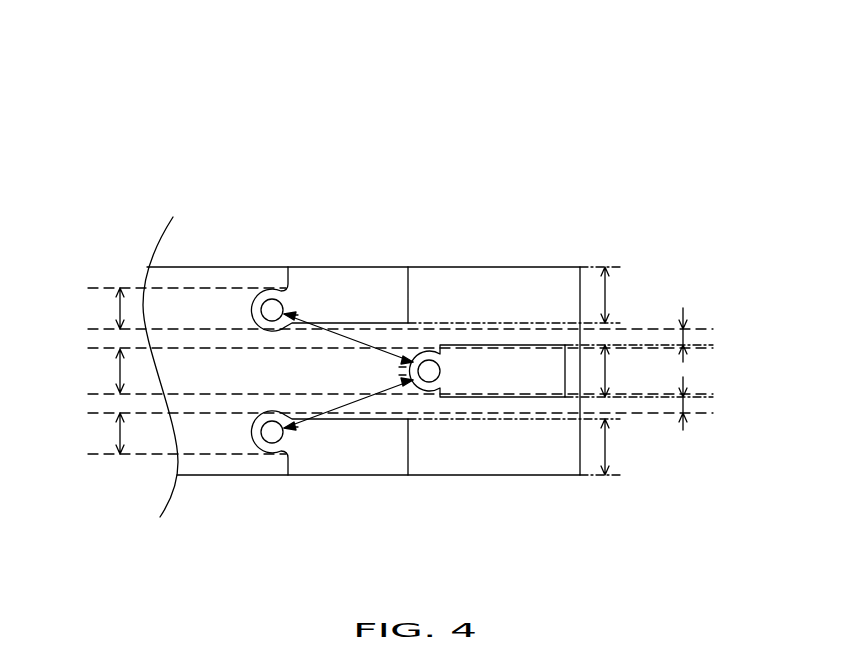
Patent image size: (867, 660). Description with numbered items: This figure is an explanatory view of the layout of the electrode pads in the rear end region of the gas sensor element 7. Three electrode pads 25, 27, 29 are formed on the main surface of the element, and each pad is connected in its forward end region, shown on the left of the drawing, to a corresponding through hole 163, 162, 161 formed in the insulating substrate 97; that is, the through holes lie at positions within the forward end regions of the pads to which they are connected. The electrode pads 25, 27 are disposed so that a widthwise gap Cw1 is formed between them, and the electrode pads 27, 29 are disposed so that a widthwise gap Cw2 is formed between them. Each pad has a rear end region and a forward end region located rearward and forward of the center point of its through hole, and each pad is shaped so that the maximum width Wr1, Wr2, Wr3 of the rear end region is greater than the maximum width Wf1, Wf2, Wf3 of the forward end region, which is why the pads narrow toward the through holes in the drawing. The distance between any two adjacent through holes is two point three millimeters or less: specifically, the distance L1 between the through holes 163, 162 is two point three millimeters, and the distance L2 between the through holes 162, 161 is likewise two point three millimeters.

The gas sensor element 7 is at (363, 108).
The insulating substrate 97 is at (512, 462).
The electrode pad 25 is at (362, 283).
The through hole 163 is at (272, 304).
The electrode pad 29 is at (362, 459).
The through hole 161 is at (272, 438).
The electrode pad 27 is at (508, 355).
The through hole 162 is at (428, 366).
The distance between through holes 163 and 162 L1 is at (348, 332).
The distance between through holes 162 and 161 L2 is at (348, 412).
The maximum width of forward end region Wf1 is at (97, 308).
The maximum width of forward end region Wf2 is at (97, 371).
The maximum width of forward end region Wf3 is at (97, 433).
The maximum width of rear end region Wr1 is at (626, 295).
The maximum width of rear end region Wr2 is at (626, 371).
The maximum width of rear end region Wr3 is at (626, 447).
The widthwise gap Cw1 is at (706, 332).
The widthwise gap Cw2 is at (706, 410).